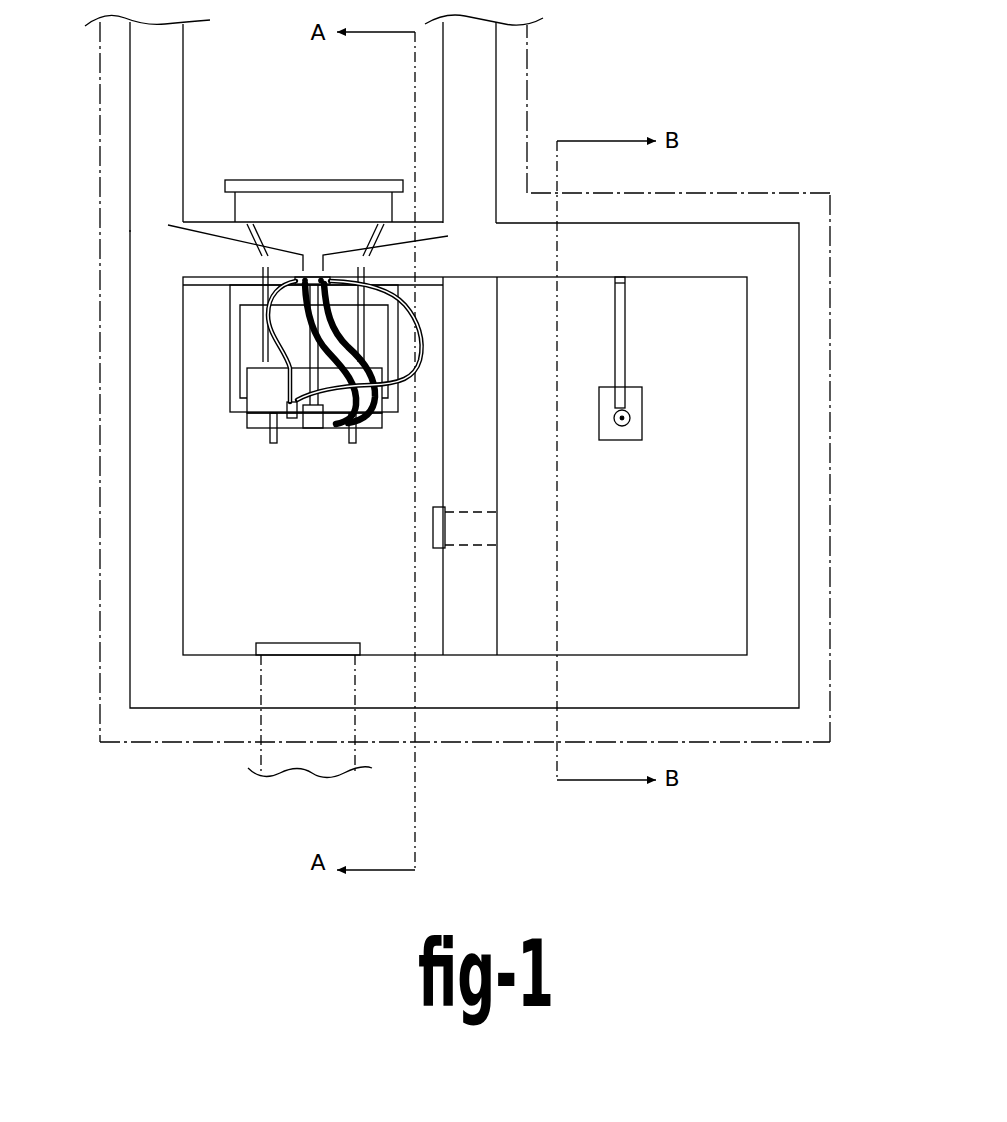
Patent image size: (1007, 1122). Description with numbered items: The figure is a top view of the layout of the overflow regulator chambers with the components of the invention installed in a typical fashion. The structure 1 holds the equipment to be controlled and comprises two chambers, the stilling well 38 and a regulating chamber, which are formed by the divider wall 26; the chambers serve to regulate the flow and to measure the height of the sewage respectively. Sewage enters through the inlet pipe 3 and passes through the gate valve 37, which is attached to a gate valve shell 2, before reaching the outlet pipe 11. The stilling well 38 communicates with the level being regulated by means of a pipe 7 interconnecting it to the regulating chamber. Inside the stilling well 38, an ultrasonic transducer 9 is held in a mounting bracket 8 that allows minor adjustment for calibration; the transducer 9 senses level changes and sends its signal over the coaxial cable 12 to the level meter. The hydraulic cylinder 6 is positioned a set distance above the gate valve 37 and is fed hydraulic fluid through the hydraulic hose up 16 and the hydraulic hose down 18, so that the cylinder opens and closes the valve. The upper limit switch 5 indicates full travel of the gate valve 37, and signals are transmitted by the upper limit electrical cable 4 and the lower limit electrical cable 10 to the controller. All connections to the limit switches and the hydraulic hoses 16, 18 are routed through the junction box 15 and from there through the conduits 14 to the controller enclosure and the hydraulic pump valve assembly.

The structure 1 is at (157, 95).
The gate valve shell 2 is at (237, 337).
The inlet pipe 3 is at (292, 185).
The upper limit electrical cable 4 is at (290, 376).
The upper limit switch 5 is at (291, 421).
The hydraulic cylinder 6 is at (315, 429).
The pipe 7 is at (432, 536).
The ultrasonic transducer mounting bracket 8 is at (622, 297).
The ultrasonic transducer 9 is at (628, 426).
The lower limit electrical cable 10 is at (424, 347).
The outlet pipe 11 is at (268, 750).
The ultrasonic level meter coaxial cable 12 is at (625, 417).
The conduits 14 is at (305, 285).
The junction box 15 is at (314, 275).
The hydraulic hose up 16 is at (293, 299).
The hydraulic hose down 18 is at (370, 344).
The divider wall 26 is at (468, 622).
The gate valve 37 is at (372, 428).
The stilling well 38 is at (635, 592).